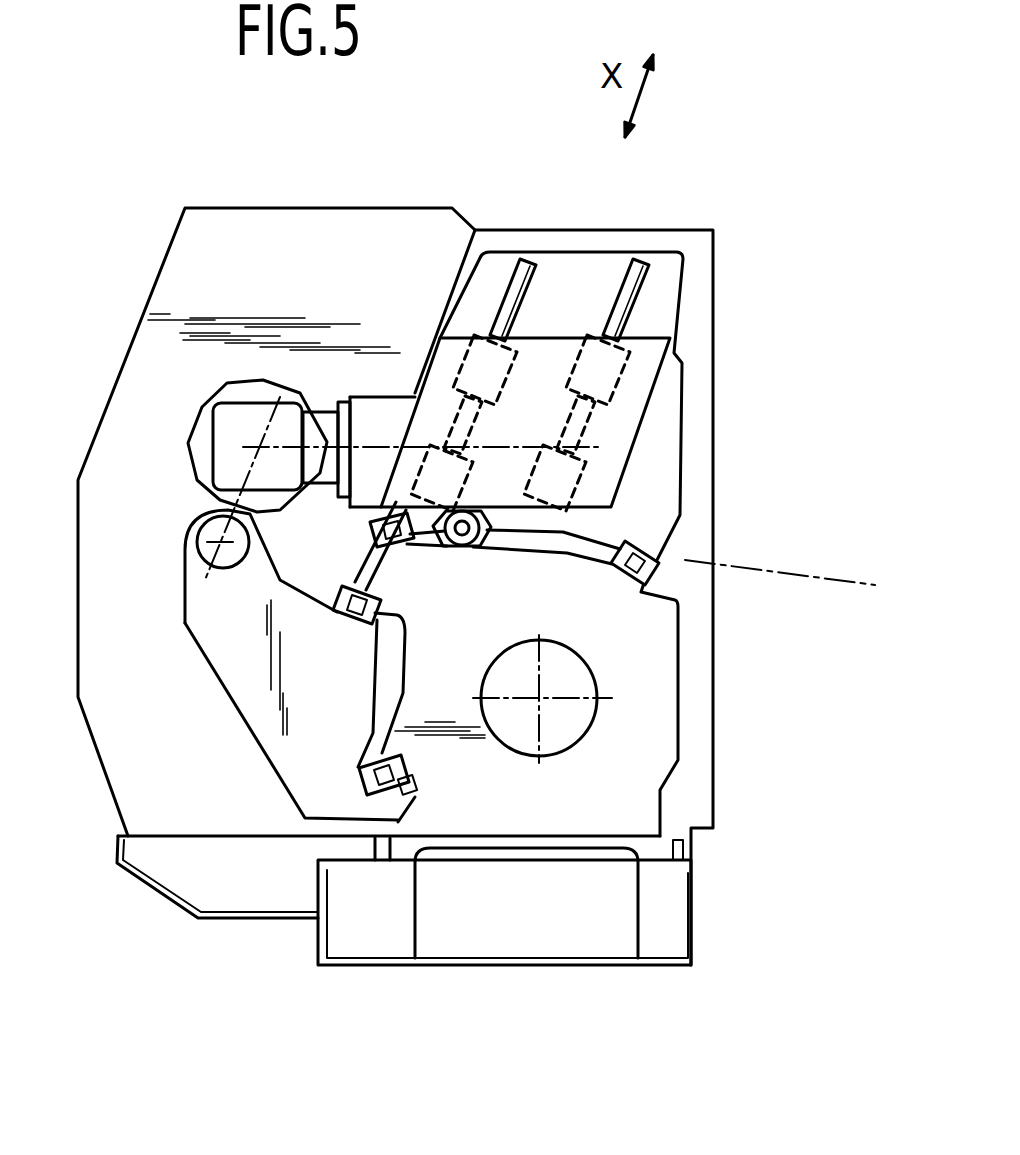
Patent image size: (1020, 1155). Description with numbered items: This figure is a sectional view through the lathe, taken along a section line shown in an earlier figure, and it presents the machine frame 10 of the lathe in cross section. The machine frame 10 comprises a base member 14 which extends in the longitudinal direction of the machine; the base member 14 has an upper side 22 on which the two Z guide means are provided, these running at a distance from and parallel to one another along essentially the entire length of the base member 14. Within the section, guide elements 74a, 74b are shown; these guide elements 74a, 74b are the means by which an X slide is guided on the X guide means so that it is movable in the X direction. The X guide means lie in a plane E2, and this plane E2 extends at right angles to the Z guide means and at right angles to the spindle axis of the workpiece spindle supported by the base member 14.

The machine frame 10 is at (660, 710).
The base member 14 is at (615, 783).
The upper side 22 is at (597, 530).
The guide element 74a is at (620, 372).
The guide element 74b is at (483, 372).
The plane E2 is at (848, 578).